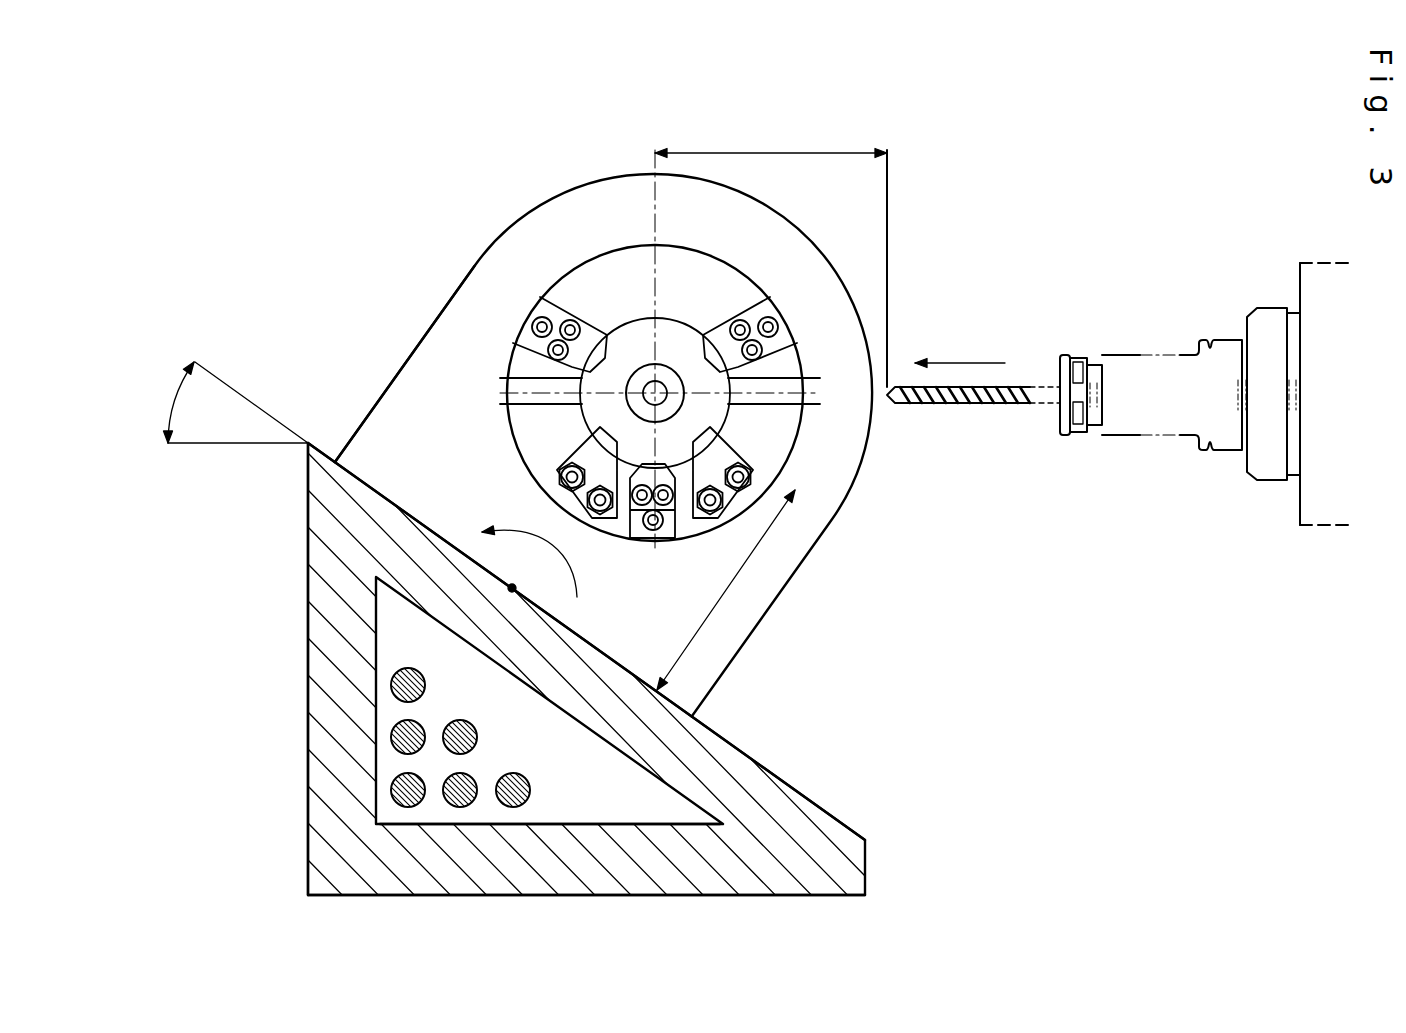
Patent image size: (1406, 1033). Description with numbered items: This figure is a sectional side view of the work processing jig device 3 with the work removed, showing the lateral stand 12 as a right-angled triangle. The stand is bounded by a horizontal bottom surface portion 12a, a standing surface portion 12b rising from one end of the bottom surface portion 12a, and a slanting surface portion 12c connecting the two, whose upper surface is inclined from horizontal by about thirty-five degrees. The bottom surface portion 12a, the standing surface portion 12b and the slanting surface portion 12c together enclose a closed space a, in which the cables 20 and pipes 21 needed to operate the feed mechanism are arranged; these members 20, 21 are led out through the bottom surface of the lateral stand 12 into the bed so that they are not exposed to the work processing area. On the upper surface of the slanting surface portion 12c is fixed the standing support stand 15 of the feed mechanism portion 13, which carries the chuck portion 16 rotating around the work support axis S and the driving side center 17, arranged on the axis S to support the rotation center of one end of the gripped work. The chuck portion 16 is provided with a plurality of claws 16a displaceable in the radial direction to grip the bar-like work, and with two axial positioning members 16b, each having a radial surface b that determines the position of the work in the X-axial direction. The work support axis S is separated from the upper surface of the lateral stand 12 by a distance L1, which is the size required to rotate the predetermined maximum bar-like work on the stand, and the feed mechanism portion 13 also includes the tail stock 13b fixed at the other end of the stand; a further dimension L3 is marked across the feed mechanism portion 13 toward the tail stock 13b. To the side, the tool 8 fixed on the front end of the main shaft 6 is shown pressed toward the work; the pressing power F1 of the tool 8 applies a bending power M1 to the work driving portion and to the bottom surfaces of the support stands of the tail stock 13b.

The work processing jig device 3 is at (898, 870).
The main shaft 6 is at (1268, 307).
The tool 8 is at (975, 403).
The lateral stand 12 is at (808, 778).
The bottom surface portion 12a is at (687, 883).
The standing surface portion 12b is at (330, 682).
The slanting surface portion 12c is at (722, 760).
The feed mechanism portion 13 is at (853, 258).
The tail stock 13b is at (889, 331).
The standing support stand 15 is at (405, 385).
The chuck portion 16 is at (718, 266).
The claws 16a is at (608, 335).
The axial positioning members 16b is at (545, 498).
The driving side center 17 is at (740, 383).
The cables 20 is at (427, 684).
The pipes 21 is at (533, 792).
The work support axis S is at (520, 378).
The closed space a is at (553, 810).
The radial surface b is at (590, 455).
The bending power M1 is at (577, 570).
The distance L1 is at (748, 558).
The distance L3 is at (766, 153).
The power for pressing the tool F1 is at (980, 368).